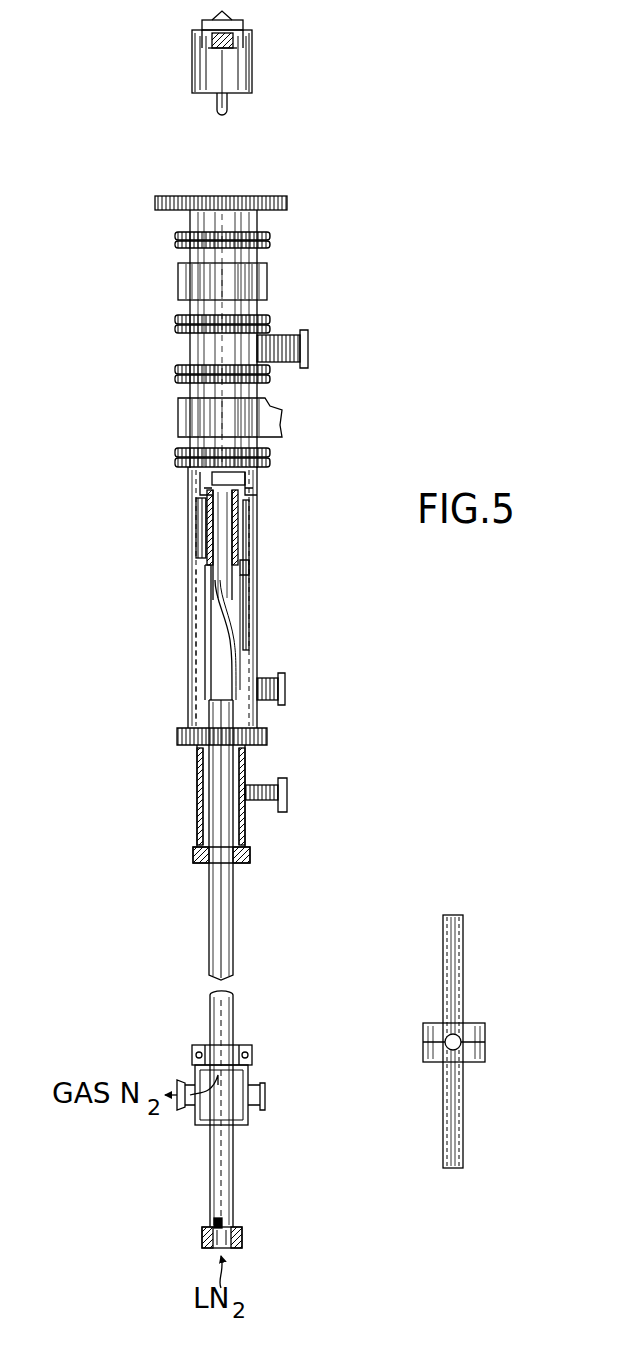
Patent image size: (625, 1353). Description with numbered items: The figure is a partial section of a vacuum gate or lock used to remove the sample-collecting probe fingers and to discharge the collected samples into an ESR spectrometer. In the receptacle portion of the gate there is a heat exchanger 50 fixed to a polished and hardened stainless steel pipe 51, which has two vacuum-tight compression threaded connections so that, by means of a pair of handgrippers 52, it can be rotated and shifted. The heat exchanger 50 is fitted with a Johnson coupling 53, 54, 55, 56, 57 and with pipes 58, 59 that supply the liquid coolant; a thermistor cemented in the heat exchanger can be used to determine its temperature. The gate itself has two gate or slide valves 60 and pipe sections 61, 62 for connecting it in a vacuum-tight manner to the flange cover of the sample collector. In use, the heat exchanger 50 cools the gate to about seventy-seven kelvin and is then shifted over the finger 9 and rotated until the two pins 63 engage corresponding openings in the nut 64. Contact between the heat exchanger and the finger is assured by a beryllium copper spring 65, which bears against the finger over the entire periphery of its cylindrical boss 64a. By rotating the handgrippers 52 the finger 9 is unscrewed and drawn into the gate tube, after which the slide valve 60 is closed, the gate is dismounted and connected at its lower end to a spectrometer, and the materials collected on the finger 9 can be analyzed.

The finger 9 is at (228, 104).
The heat exchanger 50 is at (249, 536).
The polished and hardened stainless steel pipe 51 is at (213, 588).
The handgrippers 52 is at (458, 993).
The Johnson coupling 53 is at (233, 1165).
The Johnson coupling 54 is at (241, 1238).
The Johnson coupling 55 is at (207, 1112).
The Johnson coupling 56 is at (215, 1226).
The Johnson coupling 57 is at (204, 1238).
The pipe 58 is at (198, 542).
The pipe 59 is at (250, 612).
The gate valve 60 is at (187, 280).
The pipe section 61 is at (253, 222).
The pipe section 62 is at (304, 345).
The pins 63 is at (254, 482).
The nut 64 is at (245, 38).
The cylindrical boss 64a is at (210, 47).
The beryllium copper spring 65 is at (205, 492).